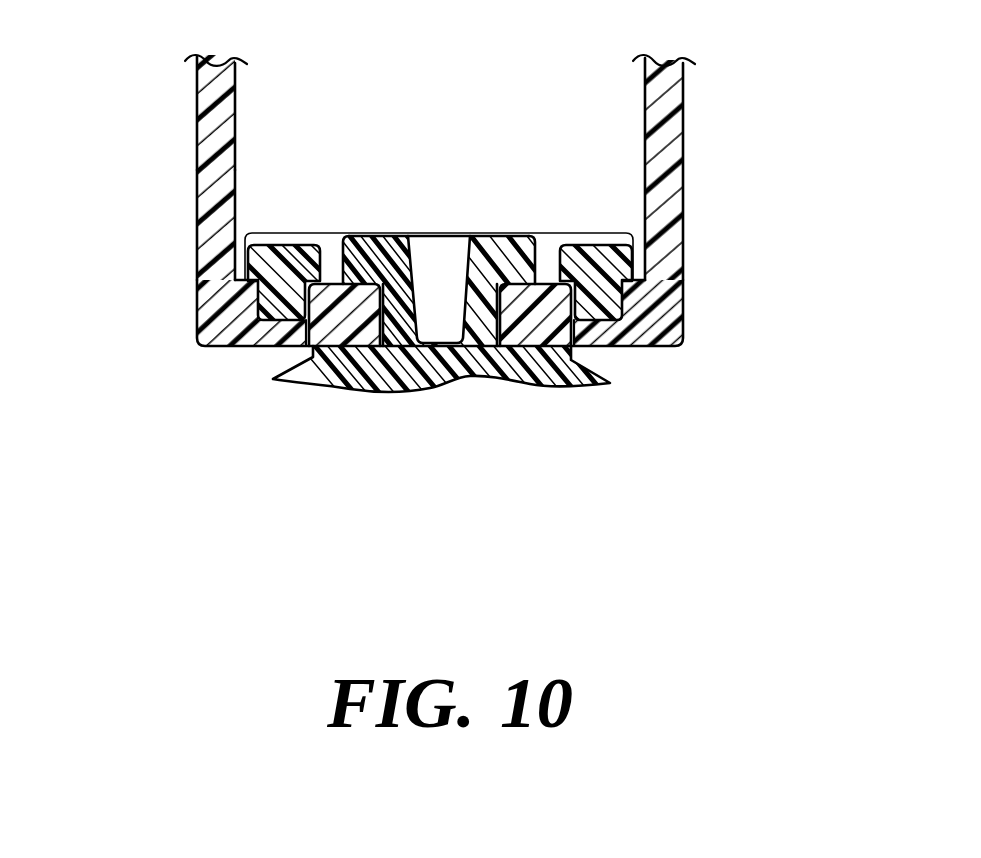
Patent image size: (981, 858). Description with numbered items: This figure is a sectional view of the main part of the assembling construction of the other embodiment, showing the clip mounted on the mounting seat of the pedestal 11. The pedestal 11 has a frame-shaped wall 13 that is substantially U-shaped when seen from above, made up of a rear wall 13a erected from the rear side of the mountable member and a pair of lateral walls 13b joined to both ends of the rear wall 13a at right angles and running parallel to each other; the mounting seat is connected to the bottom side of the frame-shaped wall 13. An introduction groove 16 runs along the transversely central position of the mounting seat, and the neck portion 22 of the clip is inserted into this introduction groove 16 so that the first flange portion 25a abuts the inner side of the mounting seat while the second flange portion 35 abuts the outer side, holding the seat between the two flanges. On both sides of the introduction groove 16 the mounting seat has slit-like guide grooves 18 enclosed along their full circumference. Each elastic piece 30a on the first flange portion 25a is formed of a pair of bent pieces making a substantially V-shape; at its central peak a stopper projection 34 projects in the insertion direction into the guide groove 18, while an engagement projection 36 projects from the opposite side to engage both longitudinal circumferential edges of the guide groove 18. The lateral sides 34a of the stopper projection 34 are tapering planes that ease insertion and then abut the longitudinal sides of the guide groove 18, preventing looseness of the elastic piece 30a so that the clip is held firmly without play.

The pedestal 11 is at (702, 119).
The frame-shaped wall 13 is at (100, 111).
The rear wall 13a is at (250, 131).
The lateral wall 13b is at (209, 198).
The introduction groove 16 is at (360, 322).
The guide groove 18 is at (270, 322).
The neck portion 22 is at (402, 236).
The first flange portion 25a is at (499, 226).
The elastic piece 30a is at (266, 233).
The stopper projection 34 is at (291, 286).
The lateral side 34a is at (257, 293).
The second flange portion 35 is at (545, 374).
The engagement projection 36 is at (286, 246).